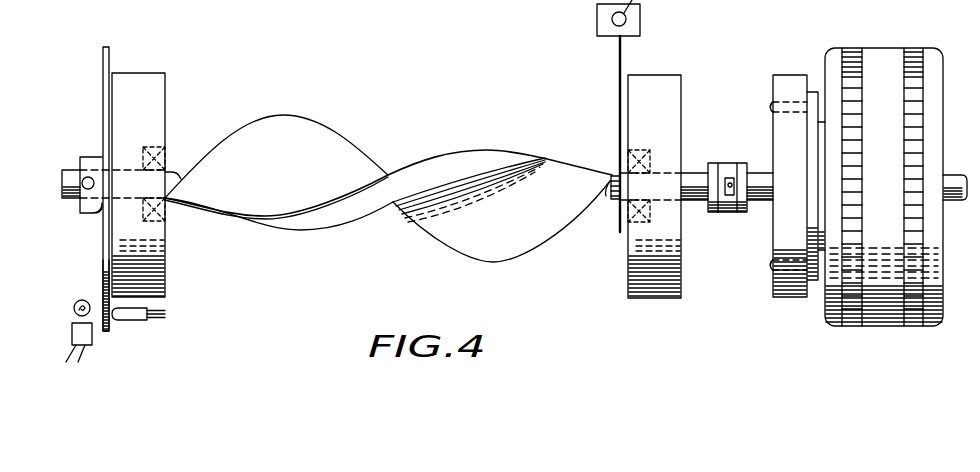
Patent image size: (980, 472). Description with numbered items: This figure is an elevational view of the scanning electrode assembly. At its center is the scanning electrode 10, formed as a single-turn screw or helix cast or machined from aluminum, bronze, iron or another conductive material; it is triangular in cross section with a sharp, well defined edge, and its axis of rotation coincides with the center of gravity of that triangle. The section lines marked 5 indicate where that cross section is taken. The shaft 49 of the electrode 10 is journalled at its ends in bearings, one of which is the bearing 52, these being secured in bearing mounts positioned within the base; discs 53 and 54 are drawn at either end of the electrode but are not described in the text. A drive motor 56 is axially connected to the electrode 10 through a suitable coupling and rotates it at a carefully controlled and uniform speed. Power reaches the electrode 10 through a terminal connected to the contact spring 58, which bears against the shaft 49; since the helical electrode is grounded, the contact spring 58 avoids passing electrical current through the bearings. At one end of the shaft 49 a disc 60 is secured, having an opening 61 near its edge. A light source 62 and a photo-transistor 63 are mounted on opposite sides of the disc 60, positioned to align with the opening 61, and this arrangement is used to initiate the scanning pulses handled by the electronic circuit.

The scanning electrode 10 is at (477, 150).
The shaft 49 is at (615, 210).
The bearing 52 is at (147, 224).
The disc 53 is at (683, 88).
The disc 54 is at (153, 113).
The drive motor 56 is at (888, 327).
The contact spring 58 is at (619, 87).
The disc 60 is at (109, 54).
The opening 61 is at (110, 322).
The light source 62 is at (82, 300).
The photo-transistor 63 is at (137, 326).
The section line 5- 5 is at (278, 112).